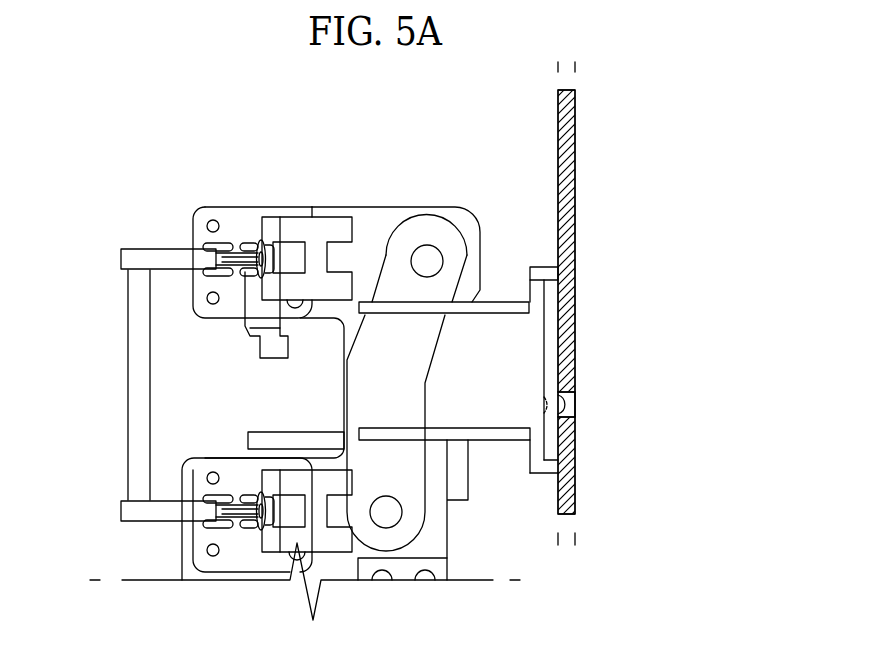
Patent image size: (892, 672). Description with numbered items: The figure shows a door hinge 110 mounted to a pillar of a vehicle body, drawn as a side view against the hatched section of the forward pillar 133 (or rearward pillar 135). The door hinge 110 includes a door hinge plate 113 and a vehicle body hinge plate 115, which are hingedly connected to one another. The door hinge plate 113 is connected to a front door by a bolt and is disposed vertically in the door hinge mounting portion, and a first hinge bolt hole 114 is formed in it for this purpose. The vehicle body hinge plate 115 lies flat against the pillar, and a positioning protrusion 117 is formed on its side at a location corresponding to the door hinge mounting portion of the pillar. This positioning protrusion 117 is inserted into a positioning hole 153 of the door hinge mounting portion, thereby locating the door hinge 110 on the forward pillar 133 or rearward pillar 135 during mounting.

The door hinge 110 is at (500, 225).
The door hinge plate 113 is at (412, 223).
The first hinge bolt hole 114 is at (428, 246).
The vehicle body hinge plate 115 is at (548, 325).
The positioning protrusion 117 is at (567, 408).
The forward pillar 133 is at (567, 164).
The rearward pillar 135 is at (566, 302).
The positioning hole 153 is at (577, 395).